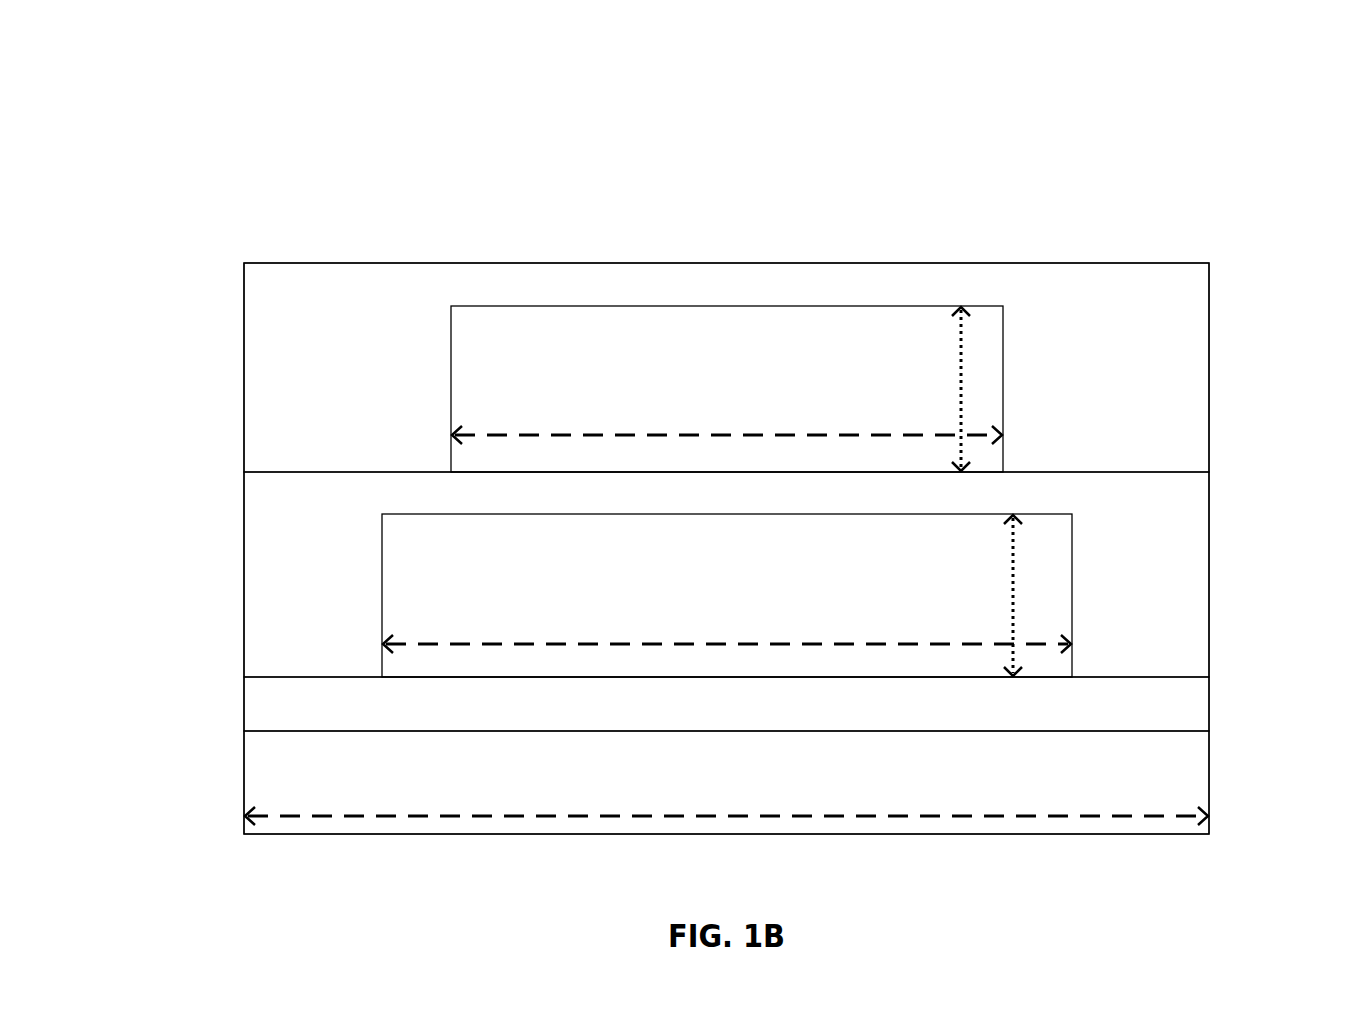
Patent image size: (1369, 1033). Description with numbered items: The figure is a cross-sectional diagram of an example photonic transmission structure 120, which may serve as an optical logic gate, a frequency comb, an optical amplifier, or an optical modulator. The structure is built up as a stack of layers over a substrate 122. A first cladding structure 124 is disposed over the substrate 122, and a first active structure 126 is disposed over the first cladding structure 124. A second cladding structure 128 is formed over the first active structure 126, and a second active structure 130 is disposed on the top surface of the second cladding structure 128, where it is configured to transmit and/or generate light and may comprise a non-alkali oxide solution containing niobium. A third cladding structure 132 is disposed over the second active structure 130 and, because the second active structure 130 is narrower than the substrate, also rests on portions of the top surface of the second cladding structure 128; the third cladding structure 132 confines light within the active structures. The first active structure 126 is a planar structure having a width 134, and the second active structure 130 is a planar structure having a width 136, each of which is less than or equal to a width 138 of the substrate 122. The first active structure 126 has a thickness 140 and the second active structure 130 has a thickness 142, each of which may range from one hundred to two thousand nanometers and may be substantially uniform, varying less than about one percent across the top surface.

The photonic transmission structure 120 is at (238, 52).
The substrate 122 is at (798, 794).
The first cladding structure 124 is at (866, 717).
The first active structure 126 is at (853, 607).
The second cladding structure 128 is at (881, 504).
The second active structure 130 is at (868, 401).
The third cladding structure 132 is at (868, 297).
The width 134 is at (381, 645).
The width 136 is at (443, 435).
The width 138 is at (244, 816).
The thickness 140 is at (1015, 561).
The thickness 142 is at (966, 354).